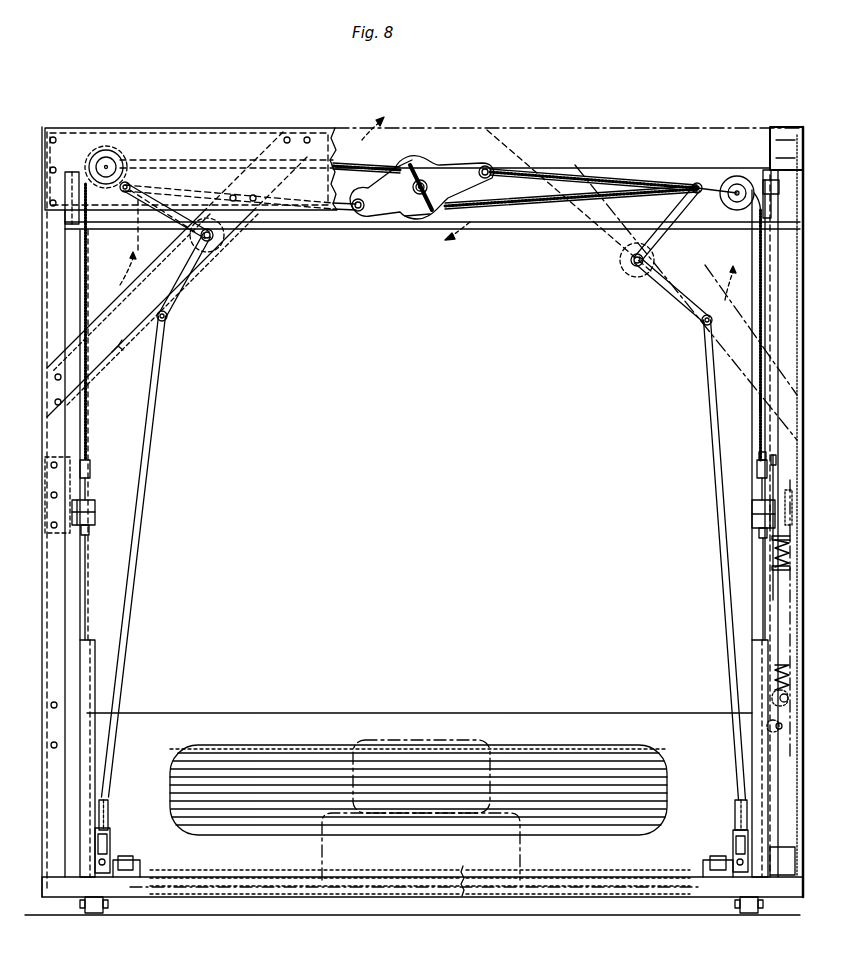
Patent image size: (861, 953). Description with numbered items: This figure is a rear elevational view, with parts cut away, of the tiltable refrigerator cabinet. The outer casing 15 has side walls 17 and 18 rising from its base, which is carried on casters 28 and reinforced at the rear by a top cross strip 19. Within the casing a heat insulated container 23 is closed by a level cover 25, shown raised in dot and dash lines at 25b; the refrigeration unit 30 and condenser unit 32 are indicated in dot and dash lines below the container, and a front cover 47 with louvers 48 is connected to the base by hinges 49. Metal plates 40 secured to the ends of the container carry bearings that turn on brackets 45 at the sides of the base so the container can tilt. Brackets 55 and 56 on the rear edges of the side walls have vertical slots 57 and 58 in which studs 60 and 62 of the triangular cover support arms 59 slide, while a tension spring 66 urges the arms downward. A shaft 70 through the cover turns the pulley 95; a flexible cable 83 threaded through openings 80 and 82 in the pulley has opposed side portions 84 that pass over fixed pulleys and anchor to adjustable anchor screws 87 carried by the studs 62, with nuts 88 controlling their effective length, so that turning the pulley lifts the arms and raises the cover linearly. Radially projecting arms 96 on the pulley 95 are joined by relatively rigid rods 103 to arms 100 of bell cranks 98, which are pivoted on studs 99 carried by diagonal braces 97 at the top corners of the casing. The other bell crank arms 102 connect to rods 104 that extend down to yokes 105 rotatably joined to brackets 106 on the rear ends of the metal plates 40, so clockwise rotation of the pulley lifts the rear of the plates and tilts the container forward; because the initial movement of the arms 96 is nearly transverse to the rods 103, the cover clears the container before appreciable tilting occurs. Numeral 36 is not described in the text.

The outer casing 15 is at (800, 262).
The side wall 17 is at (790, 607).
The side wall 18 is at (55, 604).
The top cross strip 19 is at (110, 128).
The heat insulated container 23 is at (161, 722).
The cover 25 is at (690, 165).
The raised cover position 25b is at (570, 128).
The casters 28 is at (92, 915).
The refrigeration unit 30 is at (390, 740).
The condenser unit 32 is at (378, 866).
The grille panel 36 is at (292, 700).
The metal plates 40 is at (95, 748).
The brackets 45 is at (783, 855).
The cover 47 is at (600, 720).
The louvers 48 is at (508, 768).
The hinges 49 is at (125, 878).
The bracket 55 is at (786, 135).
The bracket 56 is at (760, 455).
The slot 57 is at (787, 152).
The slot 58 is at (773, 486).
The cover support arms 59 is at (768, 398).
The studs 60 is at (765, 180).
The studs 62 is at (95, 510).
The tension spring 66 is at (778, 560).
The shaft 70 is at (428, 187).
The opening 80 is at (405, 165).
The opening 82 is at (440, 215).
The flexible cable 83 is at (412, 190).
The side portions of cable 84 is at (348, 163).
The adjustable anchor screws 87 is at (90, 472).
The nuts 88 is at (89, 532).
The pulley 95 is at (422, 165).
The arms 96 is at (365, 212).
The diagonal braces 97 is at (112, 362).
The bell cranks 98 is at (170, 315).
The studs 99 is at (214, 242).
The bell crank arm 100 is at (670, 203).
The bell crank arm 102 is at (175, 300).
The rods 103 is at (340, 210).
The rods 104 is at (130, 585).
The yokes 105 is at (110, 805).
The brackets 106 is at (110, 855).